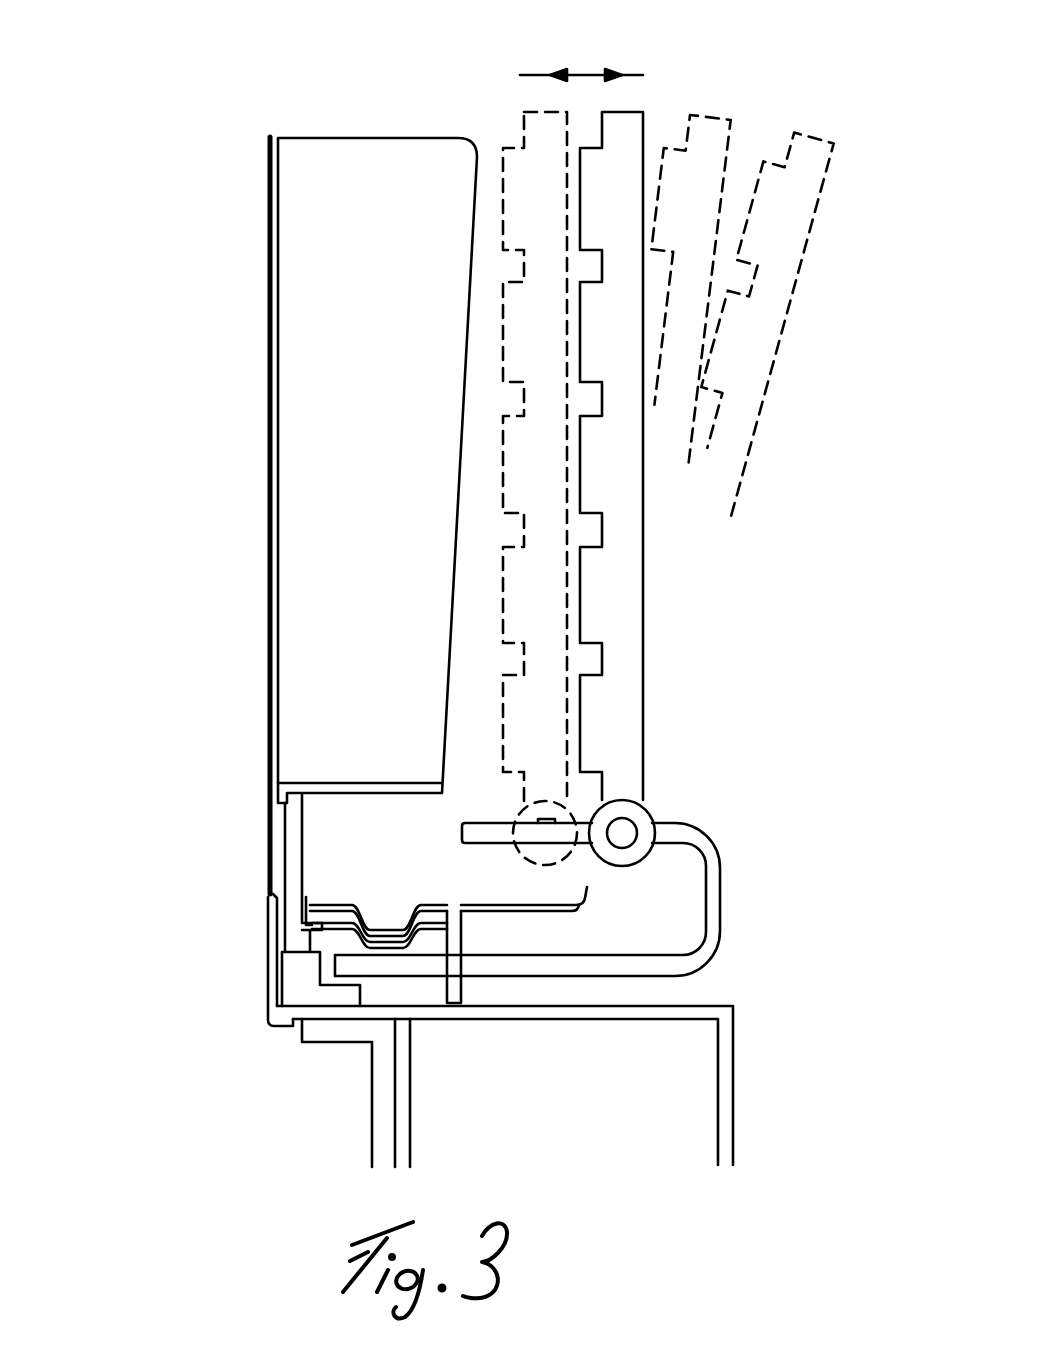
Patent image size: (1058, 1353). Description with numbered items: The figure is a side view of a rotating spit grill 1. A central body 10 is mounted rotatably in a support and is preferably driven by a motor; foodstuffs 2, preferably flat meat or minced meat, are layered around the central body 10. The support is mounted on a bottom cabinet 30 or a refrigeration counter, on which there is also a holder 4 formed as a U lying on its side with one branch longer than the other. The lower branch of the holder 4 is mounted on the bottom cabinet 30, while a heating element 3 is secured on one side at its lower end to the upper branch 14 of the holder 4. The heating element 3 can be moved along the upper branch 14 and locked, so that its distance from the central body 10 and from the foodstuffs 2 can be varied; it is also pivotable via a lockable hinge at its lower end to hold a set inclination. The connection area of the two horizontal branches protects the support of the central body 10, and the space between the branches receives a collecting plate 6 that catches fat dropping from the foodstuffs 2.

The rotating spit grill 1 is at (203, 130).
The foodstuffs 2 is at (322, 448).
The heating element 3 is at (636, 132).
The holder 4 is at (717, 870).
The collecting plate 6 is at (587, 887).
The central body 10 is at (263, 322).
The upper branch 14 is at (757, 738).
The bottom cabinet 30 is at (725, 1037).